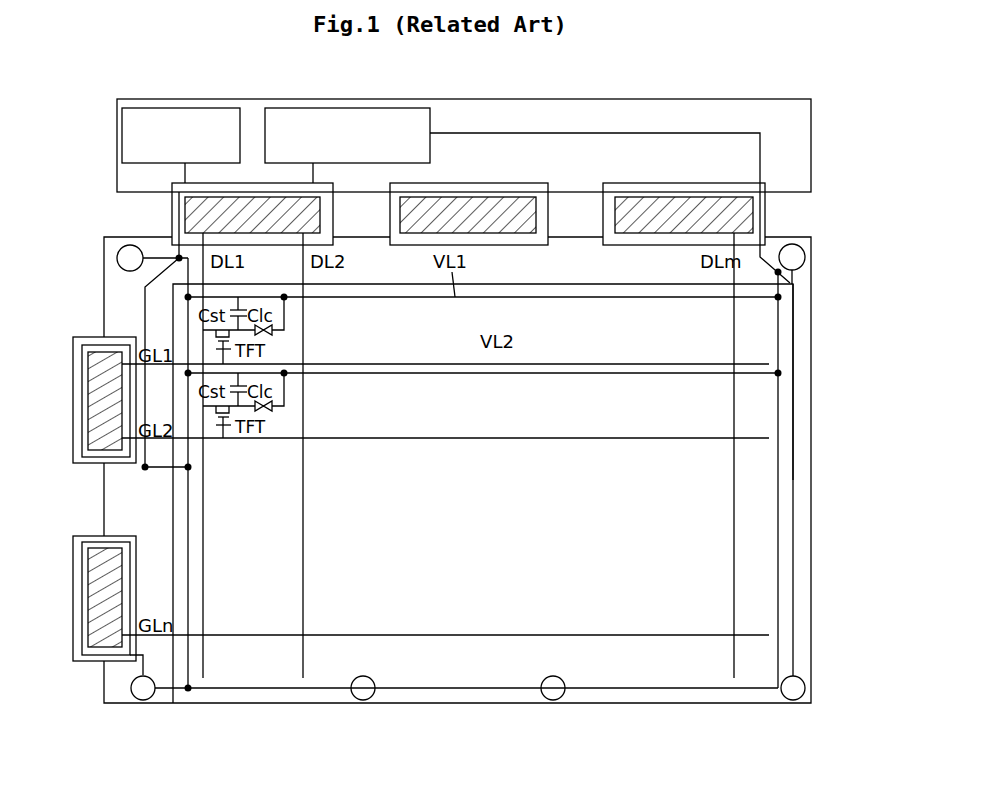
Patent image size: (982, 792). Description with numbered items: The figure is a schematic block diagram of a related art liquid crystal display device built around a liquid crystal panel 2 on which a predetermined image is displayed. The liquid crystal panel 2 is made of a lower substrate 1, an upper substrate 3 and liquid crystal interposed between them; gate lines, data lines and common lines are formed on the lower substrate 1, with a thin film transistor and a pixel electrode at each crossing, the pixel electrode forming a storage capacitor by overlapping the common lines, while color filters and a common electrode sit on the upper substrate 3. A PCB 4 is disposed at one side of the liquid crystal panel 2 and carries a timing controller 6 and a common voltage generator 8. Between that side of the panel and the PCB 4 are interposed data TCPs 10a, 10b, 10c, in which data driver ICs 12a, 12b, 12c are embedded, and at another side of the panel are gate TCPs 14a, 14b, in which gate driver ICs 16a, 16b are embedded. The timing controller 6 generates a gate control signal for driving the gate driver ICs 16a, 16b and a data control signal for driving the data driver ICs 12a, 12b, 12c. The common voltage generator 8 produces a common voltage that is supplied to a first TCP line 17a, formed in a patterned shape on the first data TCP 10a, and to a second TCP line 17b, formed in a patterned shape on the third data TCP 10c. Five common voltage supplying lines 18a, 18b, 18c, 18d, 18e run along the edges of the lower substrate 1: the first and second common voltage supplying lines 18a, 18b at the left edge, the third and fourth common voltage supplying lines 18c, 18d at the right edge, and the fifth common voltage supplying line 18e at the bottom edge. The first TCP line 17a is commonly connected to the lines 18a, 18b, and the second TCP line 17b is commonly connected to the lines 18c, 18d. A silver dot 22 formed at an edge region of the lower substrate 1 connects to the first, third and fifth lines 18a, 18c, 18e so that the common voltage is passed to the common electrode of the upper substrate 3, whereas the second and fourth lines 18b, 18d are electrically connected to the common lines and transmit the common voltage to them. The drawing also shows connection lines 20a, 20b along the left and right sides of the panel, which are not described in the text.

The lower substrate 1 is at (104, 287).
The liquid crystal panel 2 is at (827, 441).
The upper substrate 3 is at (173, 493).
The PCB 4 is at (811, 148).
The timing controller 6 is at (181, 108).
The common voltage generator 8 is at (313, 108).
The first data TCP 10a is at (172, 212).
The second data TCP 10b is at (494, 183).
The third data TCP 10c is at (692, 183).
The data driver IC 12a is at (320, 213).
The data driver IC 12b is at (536, 213).
The data driver IC 12c is at (753, 213).
The gate TCP 14a is at (73, 400).
The gate TCP 14b is at (73, 596).
The gate driver IC 16a is at (88, 423).
The gate driver IC 16b is at (88, 621).
The first TCP line 17a is at (250, 183).
The second TCP line 17b is at (528, 133).
The first common voltage supplying line 18a is at (82, 363).
The second common voltage supplying line 18b is at (188, 518).
The third common voltage supplying line 18c is at (793, 345).
The fourth common voltage supplying line 18d is at (779, 544).
The fifth common voltage supplying line 18e is at (458, 703).
The common voltage connection line 20a is at (160, 470).
The common voltage connection line 20b is at (778, 401).
The silver (Ag) dot 22 is at (793, 700).